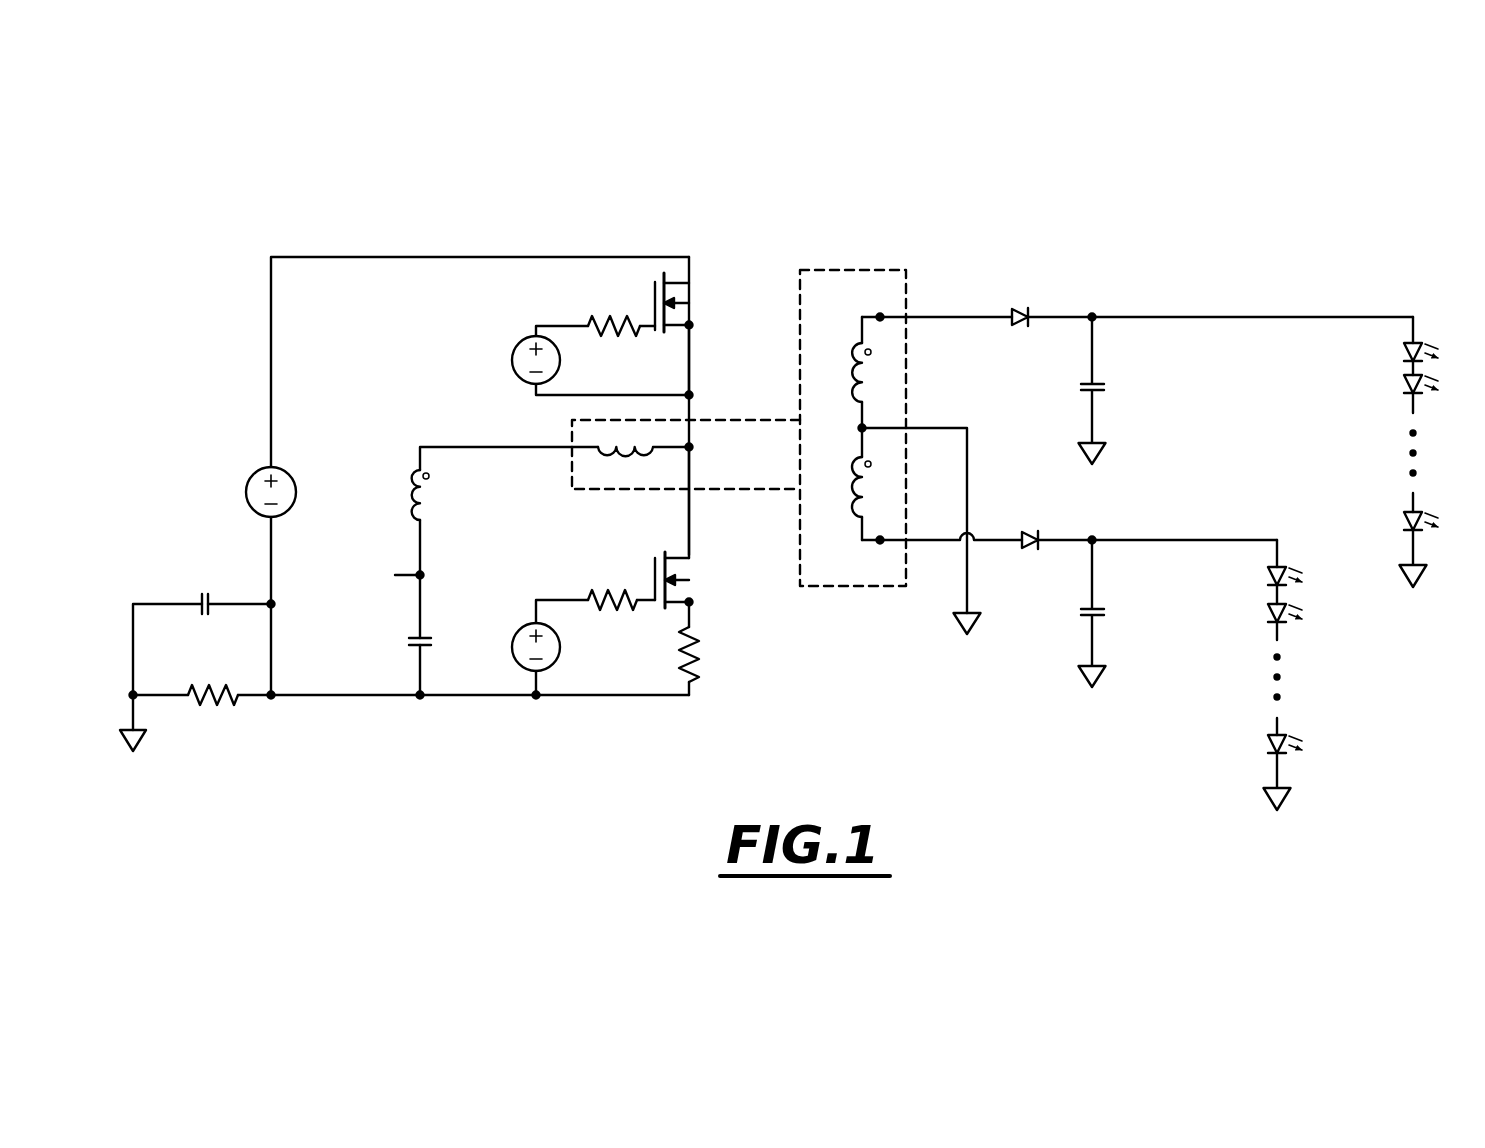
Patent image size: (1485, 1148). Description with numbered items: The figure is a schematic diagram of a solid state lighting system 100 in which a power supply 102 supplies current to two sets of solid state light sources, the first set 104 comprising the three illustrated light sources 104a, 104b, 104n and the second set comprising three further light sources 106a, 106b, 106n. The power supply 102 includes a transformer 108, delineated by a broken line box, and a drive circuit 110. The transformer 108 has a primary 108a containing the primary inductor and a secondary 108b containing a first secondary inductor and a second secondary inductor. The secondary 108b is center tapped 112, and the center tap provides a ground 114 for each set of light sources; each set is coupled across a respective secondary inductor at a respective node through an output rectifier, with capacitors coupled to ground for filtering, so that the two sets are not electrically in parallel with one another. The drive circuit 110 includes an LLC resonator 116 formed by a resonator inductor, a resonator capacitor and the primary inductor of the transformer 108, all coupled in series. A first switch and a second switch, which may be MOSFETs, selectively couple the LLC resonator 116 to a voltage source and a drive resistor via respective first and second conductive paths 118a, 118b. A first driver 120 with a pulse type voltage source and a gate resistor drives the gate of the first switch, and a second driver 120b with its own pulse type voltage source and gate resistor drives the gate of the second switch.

The solid state lighting system 100 is at (779, 473).
The power supply 102 is at (1113, 488).
The set of solid state light sources 104 is at (1347, 452).
The solid state light source 104a is at (1405, 350).
The solid state light source 104b is at (1405, 385).
The solid state light source 104n is at (1382, 524).
The solid state light source 106a is at (1267, 575).
The solid state light source 106b is at (1267, 613).
The solid state light source 106n is at (1267, 743).
The transformer 108 is at (905, 405).
The primary 108a is at (586, 506).
The secondary 108b is at (912, 355).
The drive circuit 110 is at (460, 467).
The center tap 112 is at (860, 429).
The ground 114 is at (960, 625).
The LLC resonator 116 is at (380, 460).
The first conductive path 118a is at (689, 366).
The second conductive path 118b is at (689, 535).
The driver 120 is at (454, 326).
The driver 120b is at (501, 678).